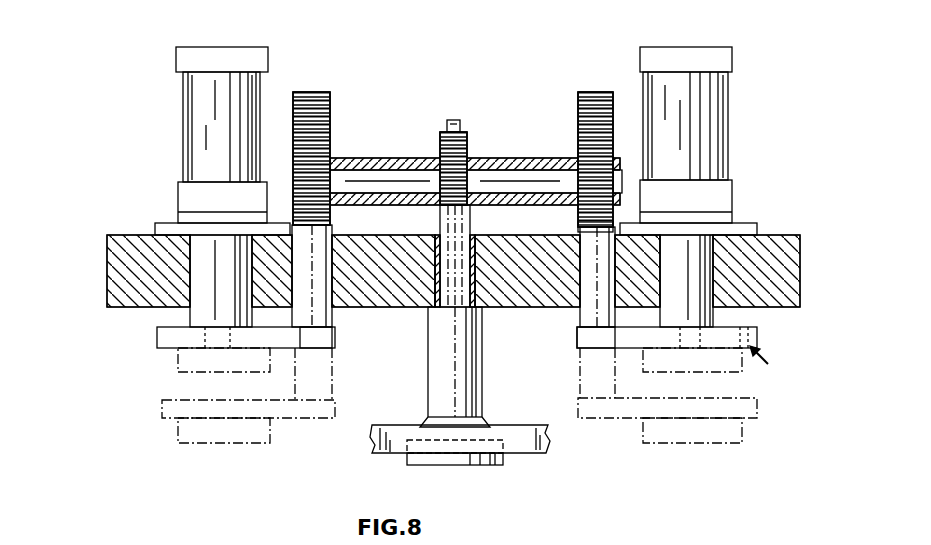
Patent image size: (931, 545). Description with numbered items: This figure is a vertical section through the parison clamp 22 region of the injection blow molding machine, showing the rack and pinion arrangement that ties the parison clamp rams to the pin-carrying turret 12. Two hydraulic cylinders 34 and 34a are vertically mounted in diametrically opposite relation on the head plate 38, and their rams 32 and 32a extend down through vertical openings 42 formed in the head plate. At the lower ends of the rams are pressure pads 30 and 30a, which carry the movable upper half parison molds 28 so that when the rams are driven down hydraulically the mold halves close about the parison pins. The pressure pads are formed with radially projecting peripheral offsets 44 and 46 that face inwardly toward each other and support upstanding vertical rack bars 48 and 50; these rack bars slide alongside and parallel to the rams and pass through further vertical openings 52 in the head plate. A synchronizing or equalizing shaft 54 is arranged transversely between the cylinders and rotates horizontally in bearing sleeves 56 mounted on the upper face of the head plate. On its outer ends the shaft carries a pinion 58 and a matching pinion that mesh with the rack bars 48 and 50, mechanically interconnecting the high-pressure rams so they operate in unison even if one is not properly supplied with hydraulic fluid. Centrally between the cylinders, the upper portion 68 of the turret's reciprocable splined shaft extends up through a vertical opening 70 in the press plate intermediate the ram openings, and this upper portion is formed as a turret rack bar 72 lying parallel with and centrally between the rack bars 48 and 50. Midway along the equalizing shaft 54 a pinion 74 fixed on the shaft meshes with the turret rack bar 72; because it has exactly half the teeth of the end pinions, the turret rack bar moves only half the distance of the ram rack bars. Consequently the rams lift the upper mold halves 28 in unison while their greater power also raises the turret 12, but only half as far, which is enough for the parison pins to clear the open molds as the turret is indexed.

The hexagonal turret 12 is at (375, 433).
The parison clamp 22 is at (779, 363).
The upper half parison mold 28 is at (182, 366).
The pressure pad 30 is at (755, 334).
The pressure pad 30a is at (160, 338).
The ram 32 is at (700, 262).
The ram 32a is at (205, 265).
The hydraulic cylinder 34 is at (720, 115).
The hydraulic cylinder 34a is at (262, 78).
The head plate 38 is at (112, 288).
The vertical openings 42 is at (272, 283).
The peripheral offset 44 is at (580, 340).
The peripheral offset 46 is at (310, 348).
The rack bar 48 is at (583, 232).
The rack bar 50 is at (312, 142).
The vertical openings 52 is at (334, 250).
The synchronizing or equalizing shaft 54 is at (522, 183).
The bearing sleeves 56 is at (396, 170).
The pinion 58 is at (578, 228).
The upper portion of splined shaft 68 is at (430, 312).
The vertical opening 70 is at (472, 270).
The turret rack bar 72 is at (440, 138).
The pinion 74 is at (468, 158).